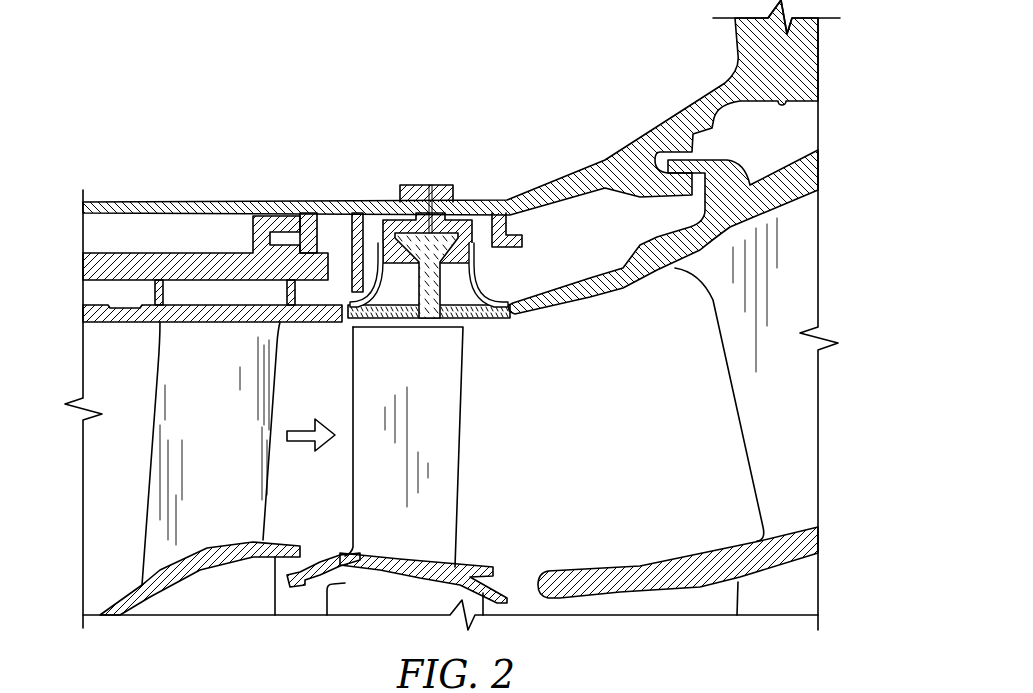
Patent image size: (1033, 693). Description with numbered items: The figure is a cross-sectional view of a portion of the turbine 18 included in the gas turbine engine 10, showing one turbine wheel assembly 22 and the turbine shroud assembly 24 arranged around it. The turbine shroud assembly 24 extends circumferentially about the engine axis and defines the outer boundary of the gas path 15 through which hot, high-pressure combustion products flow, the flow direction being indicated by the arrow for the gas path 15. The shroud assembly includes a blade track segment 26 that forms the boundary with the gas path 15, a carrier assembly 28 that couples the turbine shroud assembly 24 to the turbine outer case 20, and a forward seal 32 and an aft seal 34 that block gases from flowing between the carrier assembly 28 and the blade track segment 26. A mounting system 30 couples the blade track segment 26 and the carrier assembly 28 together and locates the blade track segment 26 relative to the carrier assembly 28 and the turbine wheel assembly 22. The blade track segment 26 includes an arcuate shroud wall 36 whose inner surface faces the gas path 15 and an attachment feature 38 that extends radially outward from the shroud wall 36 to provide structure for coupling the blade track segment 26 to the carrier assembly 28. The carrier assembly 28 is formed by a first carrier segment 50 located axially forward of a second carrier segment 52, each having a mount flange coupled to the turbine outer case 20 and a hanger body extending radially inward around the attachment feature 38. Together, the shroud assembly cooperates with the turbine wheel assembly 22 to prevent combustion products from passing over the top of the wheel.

The gas turbine engine 10 is at (183, 127).
The gas path 15 is at (300, 441).
The turbine 18 is at (145, 170).
The turbine outer case 20 is at (575, 173).
The turbine wheel assembly 22 is at (490, 544).
The turbine shroud assembly 24 is at (436, 168).
The blade track segment 26 is at (474, 338).
The carrier assembly 28 is at (520, 240).
The mounting system 30 is at (470, 194).
The forward seal 32 is at (380, 267).
The aft seal 34 is at (500, 270).
The shroud wall 36 is at (475, 320).
The attachment feature 38 is at (450, 300).
The first carrier segment 50 is at (383, 228).
The second carrier segment 52 is at (458, 250).